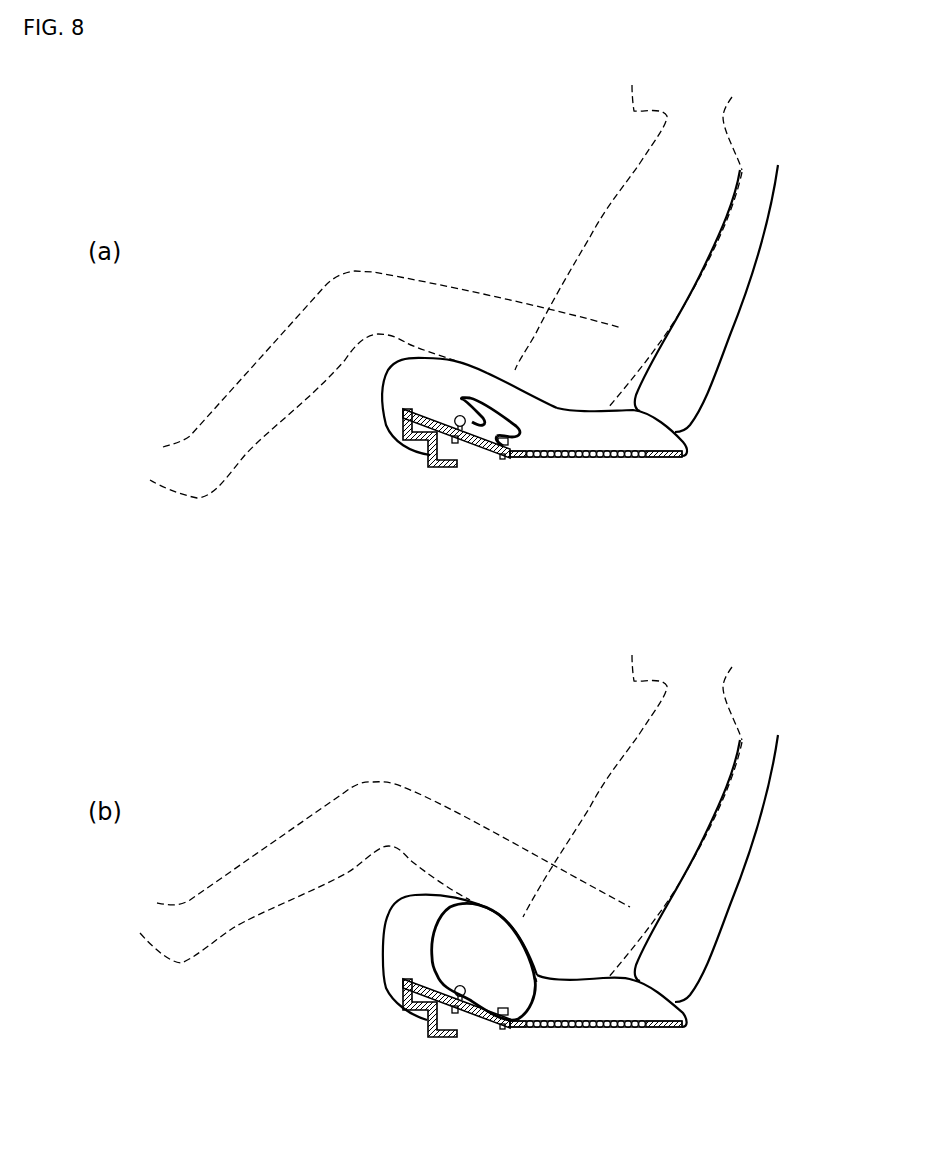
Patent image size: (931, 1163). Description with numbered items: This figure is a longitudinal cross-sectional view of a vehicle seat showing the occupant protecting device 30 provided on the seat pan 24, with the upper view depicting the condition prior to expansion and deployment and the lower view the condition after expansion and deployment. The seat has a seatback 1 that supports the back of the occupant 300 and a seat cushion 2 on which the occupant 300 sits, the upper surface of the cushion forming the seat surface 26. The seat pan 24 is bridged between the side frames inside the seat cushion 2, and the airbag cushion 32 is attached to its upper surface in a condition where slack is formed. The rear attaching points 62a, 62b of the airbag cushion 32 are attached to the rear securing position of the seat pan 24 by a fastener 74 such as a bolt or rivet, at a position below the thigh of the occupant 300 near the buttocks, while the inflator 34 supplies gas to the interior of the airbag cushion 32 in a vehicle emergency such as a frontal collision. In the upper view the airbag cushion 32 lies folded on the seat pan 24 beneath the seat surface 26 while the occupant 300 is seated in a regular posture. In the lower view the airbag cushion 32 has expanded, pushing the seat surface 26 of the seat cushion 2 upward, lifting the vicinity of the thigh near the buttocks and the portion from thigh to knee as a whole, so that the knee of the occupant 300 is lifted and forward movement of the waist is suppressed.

The seatback 1 is at (715, 324).
The seat cushion 2 is at (393, 386).
The seat pan 24 is at (483, 448).
The seat surface 26 is at (500, 372).
The occupant protecting device 30 is at (470, 384).
The airbag cushion 32 is at (524, 422).
The inflator 34 is at (417, 450).
The fastener 74 is at (500, 458).
The occupant 300 is at (613, 230).
The rear attaching point 62a is at (596, 739).
The rear attaching point 62b is at (510, 455).